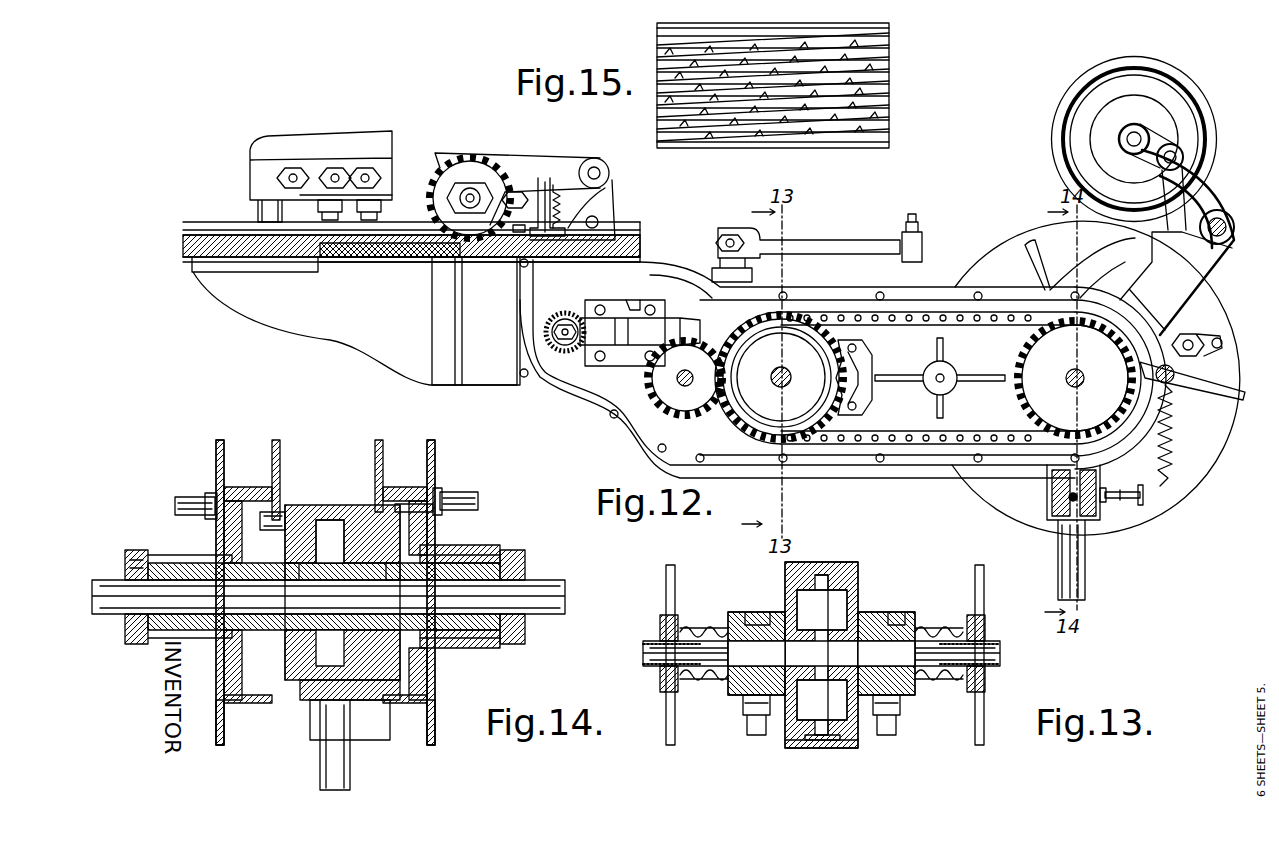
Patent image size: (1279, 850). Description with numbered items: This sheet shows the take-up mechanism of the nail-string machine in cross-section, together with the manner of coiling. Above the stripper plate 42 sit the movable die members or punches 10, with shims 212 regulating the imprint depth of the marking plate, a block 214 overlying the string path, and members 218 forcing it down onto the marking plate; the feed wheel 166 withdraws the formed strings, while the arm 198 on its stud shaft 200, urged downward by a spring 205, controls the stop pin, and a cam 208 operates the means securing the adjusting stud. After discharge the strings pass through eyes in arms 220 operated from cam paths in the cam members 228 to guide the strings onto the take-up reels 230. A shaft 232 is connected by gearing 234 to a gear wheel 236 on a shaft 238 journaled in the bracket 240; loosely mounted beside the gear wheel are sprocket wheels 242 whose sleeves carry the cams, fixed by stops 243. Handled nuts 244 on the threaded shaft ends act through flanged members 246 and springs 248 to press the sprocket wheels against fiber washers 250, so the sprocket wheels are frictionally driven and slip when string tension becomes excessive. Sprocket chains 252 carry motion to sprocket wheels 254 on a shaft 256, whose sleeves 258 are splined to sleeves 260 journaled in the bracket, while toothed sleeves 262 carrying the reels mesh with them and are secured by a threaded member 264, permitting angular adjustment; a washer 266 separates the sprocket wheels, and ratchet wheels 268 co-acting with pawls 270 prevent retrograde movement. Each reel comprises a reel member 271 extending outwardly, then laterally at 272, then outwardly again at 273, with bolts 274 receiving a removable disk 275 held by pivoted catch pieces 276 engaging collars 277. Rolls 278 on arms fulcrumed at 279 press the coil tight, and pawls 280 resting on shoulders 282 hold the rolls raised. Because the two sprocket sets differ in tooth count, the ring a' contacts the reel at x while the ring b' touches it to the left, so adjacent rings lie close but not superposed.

In FIG. 12, the movable die members or punches 10 is at (265, 210).
In FIG. 12, the flexible stripper plate 42 is at (220, 224).
In FIG. 12, the feed wheel 166 is at (455, 172).
In FIG. 12, the arm 198 is at (512, 163).
In FIG. 12, the stud shaft 200 is at (598, 173).
In FIG. 12, the spring 205 is at (560, 206).
In FIG. 12, the cam 208 is at (340, 262).
In FIG. 12, the shims 212 is at (357, 257).
In FIG. 12, the block 214 is at (352, 223).
In FIG. 12, the members 218 is at (378, 214).
In FIG. 12, the arms 220 is at (855, 242).
In FIG. 13, the cam members 228 is at (905, 626).
In FIG. 12, the take-up reels 230 is at (1210, 452).
In FIG. 14, the take-up reels 230 is at (247, 445).
In FIG. 12, the shaft 232 is at (565, 348).
In FIG. 12, the gearing 234 is at (683, 314).
In FIG. 12, the gear wheel 236 is at (768, 448).
In FIG. 13, the gear wheel 236 is at (838, 580).
In FIG. 12, the shaft 238 is at (790, 392).
In FIG. 13, the shaft 238 is at (895, 645).
In FIG. 12, the bracket 240 is at (1000, 235).
In FIG. 14, the bracket 240 is at (290, 512).
In FIG. 13, the bracket 240 is at (860, 748).
In FIG. 13, the sprocket wheels 242 is at (805, 605).
In FIG. 13, the stops 243 is at (880, 620).
In FIG. 13, the handled nuts 244 is at (985, 630).
In FIG. 13, the flanged members 246 is at (722, 682).
In FIG. 13, the springs 248 is at (712, 680).
In FIG. 13, the fiber washers 250 is at (835, 750).
In FIG. 12, the sprocket chains 252 is at (880, 452).
In FIG. 14, the sprocket wheels 254 is at (345, 520).
In FIG. 12, the shaft 256 is at (1084, 380).
In FIG. 14, the shaft 256 is at (537, 590).
In FIG. 14, the sleeves 258 is at (130, 628).
In FIG. 14, the sleeves 260 is at (242, 562).
In FIG. 14, the sleeves 262 is at (485, 555).
In FIG. 14, the threaded member 264 is at (133, 550).
In FIG. 14, the washer 266 is at (307, 700).
In FIG. 12, the ratchet wheels 268 is at (1196, 338).
In FIG. 14, the ratchet wheels 268 is at (310, 520).
In FIG. 12, the pawls 270 is at (1205, 395).
In FIG. 14, the reel member 271 is at (214, 484).
In FIG. 14, the lateral portion 272 is at (325, 479).
In FIG. 14, the outward portion 273 is at (280, 456).
In FIG. 14, the bolts 274 is at (172, 503).
In FIG. 14, the disk 275 is at (221, 748).
In FIG. 14, the pivoted catch pieces 276 is at (440, 492).
In FIG. 14, the collars 277 is at (445, 522).
In FIG. 12, the rolls 278 is at (1210, 122).
In FIG. 12, the fulcrum 279 is at (1218, 222).
In FIG. 12, the pawls 280 is at (1185, 180).
In FIG. 12, the shoulders 282 is at (1200, 292).
In FIG. 15, the point X x is at (745, 132).
In FIG. 15, the ring b' is at (770, 154).
In FIG. 15, the ring a' is at (830, 159).